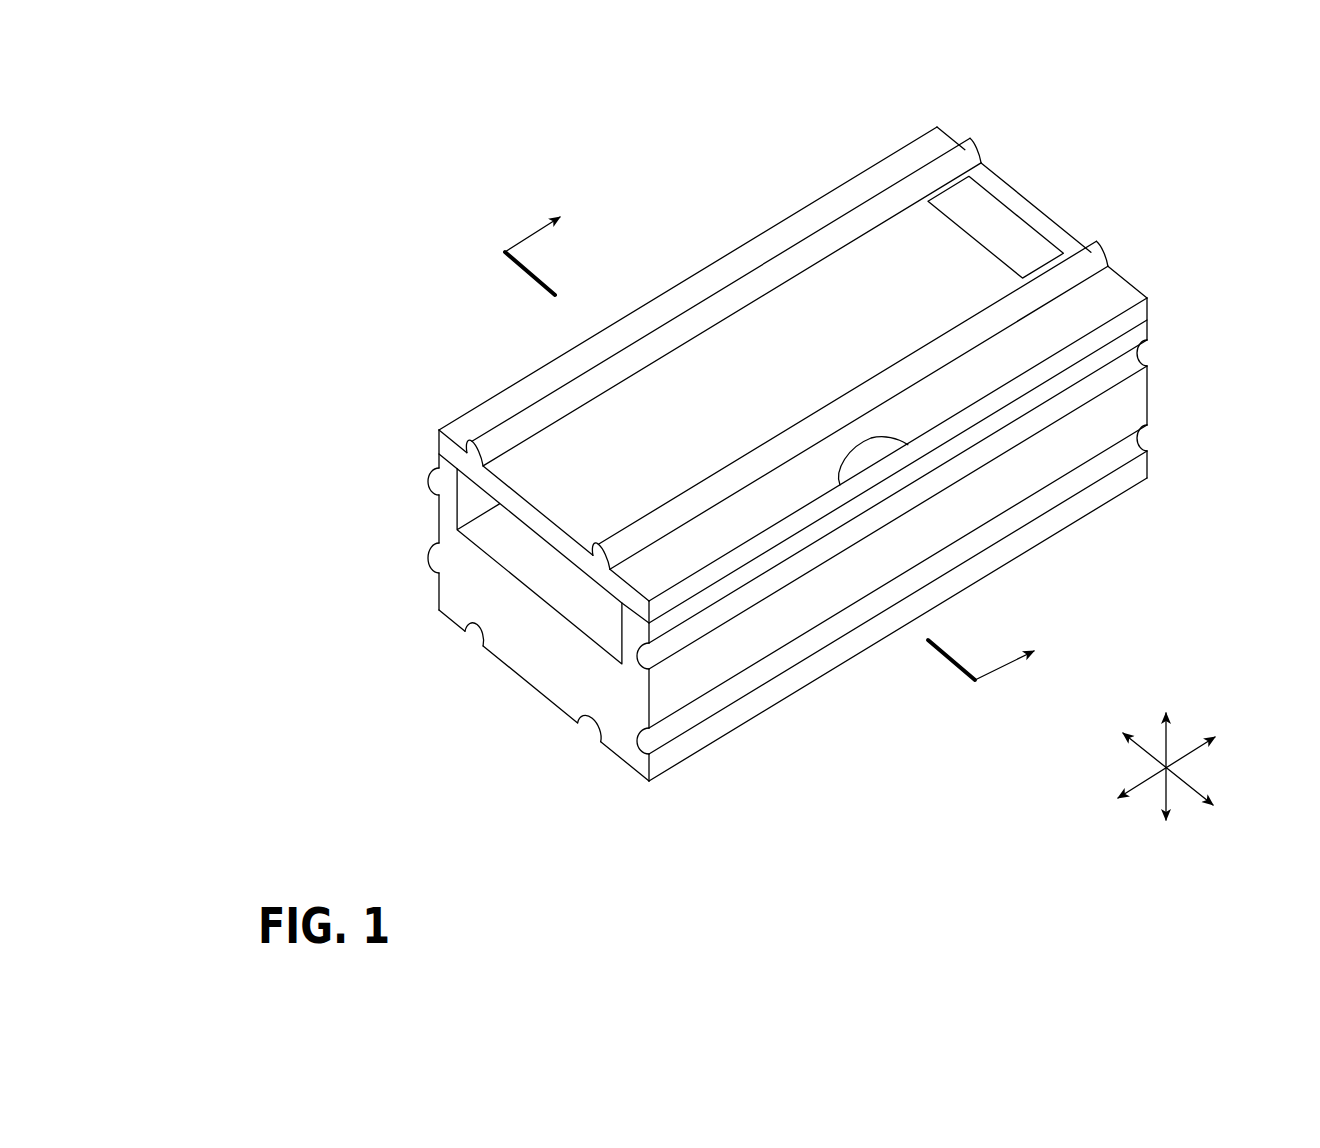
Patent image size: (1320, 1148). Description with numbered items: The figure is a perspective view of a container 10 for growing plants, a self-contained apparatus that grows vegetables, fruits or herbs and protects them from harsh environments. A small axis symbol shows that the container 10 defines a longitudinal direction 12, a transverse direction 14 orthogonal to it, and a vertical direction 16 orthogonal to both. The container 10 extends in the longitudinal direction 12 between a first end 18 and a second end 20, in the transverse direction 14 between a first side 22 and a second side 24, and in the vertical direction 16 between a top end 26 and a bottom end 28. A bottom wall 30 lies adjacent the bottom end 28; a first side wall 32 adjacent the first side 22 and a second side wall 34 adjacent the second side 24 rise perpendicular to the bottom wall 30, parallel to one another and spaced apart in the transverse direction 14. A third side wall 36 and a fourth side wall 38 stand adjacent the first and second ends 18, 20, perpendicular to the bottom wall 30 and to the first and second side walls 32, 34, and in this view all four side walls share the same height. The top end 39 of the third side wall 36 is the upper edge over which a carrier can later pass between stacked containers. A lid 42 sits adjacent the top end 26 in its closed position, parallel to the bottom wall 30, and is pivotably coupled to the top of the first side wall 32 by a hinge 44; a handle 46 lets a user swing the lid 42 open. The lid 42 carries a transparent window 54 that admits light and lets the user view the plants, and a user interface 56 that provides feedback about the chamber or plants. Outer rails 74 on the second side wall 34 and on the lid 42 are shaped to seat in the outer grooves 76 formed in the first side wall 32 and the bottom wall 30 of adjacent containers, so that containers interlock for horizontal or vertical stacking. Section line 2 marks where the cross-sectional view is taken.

The container 10 is at (407, 238).
The longitudinal direction 12 is at (1190, 753).
The transverse direction 14 is at (1147, 752).
The vertical direction 16 is at (1168, 740).
The first end 18 is at (518, 780).
The second end 20 is at (1203, 292).
The first side 22 is at (758, 193).
The second side 24 is at (1094, 549).
The top end 26 is at (858, 133).
The bottom end 28 is at (856, 687).
The bottom wall 30 is at (535, 688).
The first side wall 32 is at (698, 737).
The second side wall 34 is at (435, 522).
The third side wall 36 is at (532, 632).
The fourth side wall 38 is at (1150, 395).
The top end of third side wall 39 is at (527, 568).
The lid 42 is at (710, 258).
The hinge 44 is at (436, 443).
The handle 46 is at (872, 445).
The window 54 is at (692, 360).
The user interface 56 is at (989, 222).
The outer rails 74 is at (530, 410).
The outer grooves 76 is at (466, 632).
The Line 2- 2 is at (779, 434).